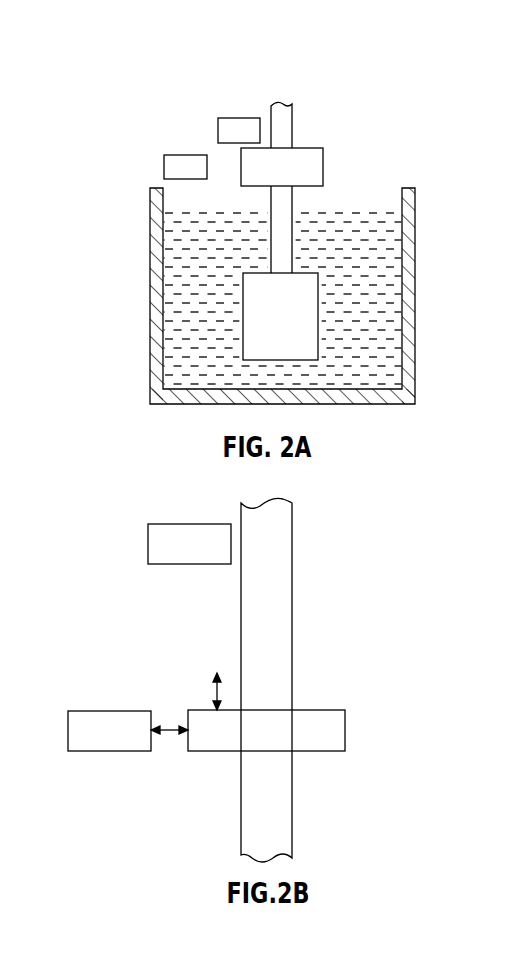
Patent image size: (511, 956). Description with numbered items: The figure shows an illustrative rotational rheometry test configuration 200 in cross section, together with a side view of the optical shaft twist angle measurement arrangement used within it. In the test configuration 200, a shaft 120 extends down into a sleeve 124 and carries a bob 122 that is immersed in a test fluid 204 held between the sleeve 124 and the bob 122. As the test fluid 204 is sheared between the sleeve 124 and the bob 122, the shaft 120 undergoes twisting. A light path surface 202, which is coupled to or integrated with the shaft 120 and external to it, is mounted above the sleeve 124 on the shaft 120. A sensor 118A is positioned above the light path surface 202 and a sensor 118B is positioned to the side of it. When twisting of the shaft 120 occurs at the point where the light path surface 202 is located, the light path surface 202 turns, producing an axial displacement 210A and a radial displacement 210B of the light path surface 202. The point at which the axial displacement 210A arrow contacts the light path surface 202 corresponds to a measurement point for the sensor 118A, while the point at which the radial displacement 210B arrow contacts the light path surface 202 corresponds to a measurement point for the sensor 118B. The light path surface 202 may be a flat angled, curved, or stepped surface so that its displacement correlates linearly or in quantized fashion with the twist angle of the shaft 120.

In FIG. 2A, the rotational rheometry test configuration 200 is at (400, 121).
In FIG. 2A, the shaft 120 is at (292, 108).
In FIG. 2B, the shaft 120 is at (292, 609).
In FIG. 2A, the light path surface 202 is at (323, 170).
In FIG. 2B, the light path surface 202 is at (313, 710).
In FIG. 2A, the bob 122 is at (303, 341).
In FIG. 2A, the sleeve 124 is at (157, 235).
In FIG. 2A, the test fluid 204 is at (383, 360).
In FIG. 2A, the sensor 118A is at (237, 118).
In FIG. 2B, the sensor 118A is at (189, 523).
In FIG. 2A, the sensor 118B is at (184, 155).
In FIG. 2B, the sensor 118B is at (111, 711).
In FIG. 2B, the axial displacement 210A is at (214, 690).
In FIG. 2B, the radial displacement 210B is at (168, 735).